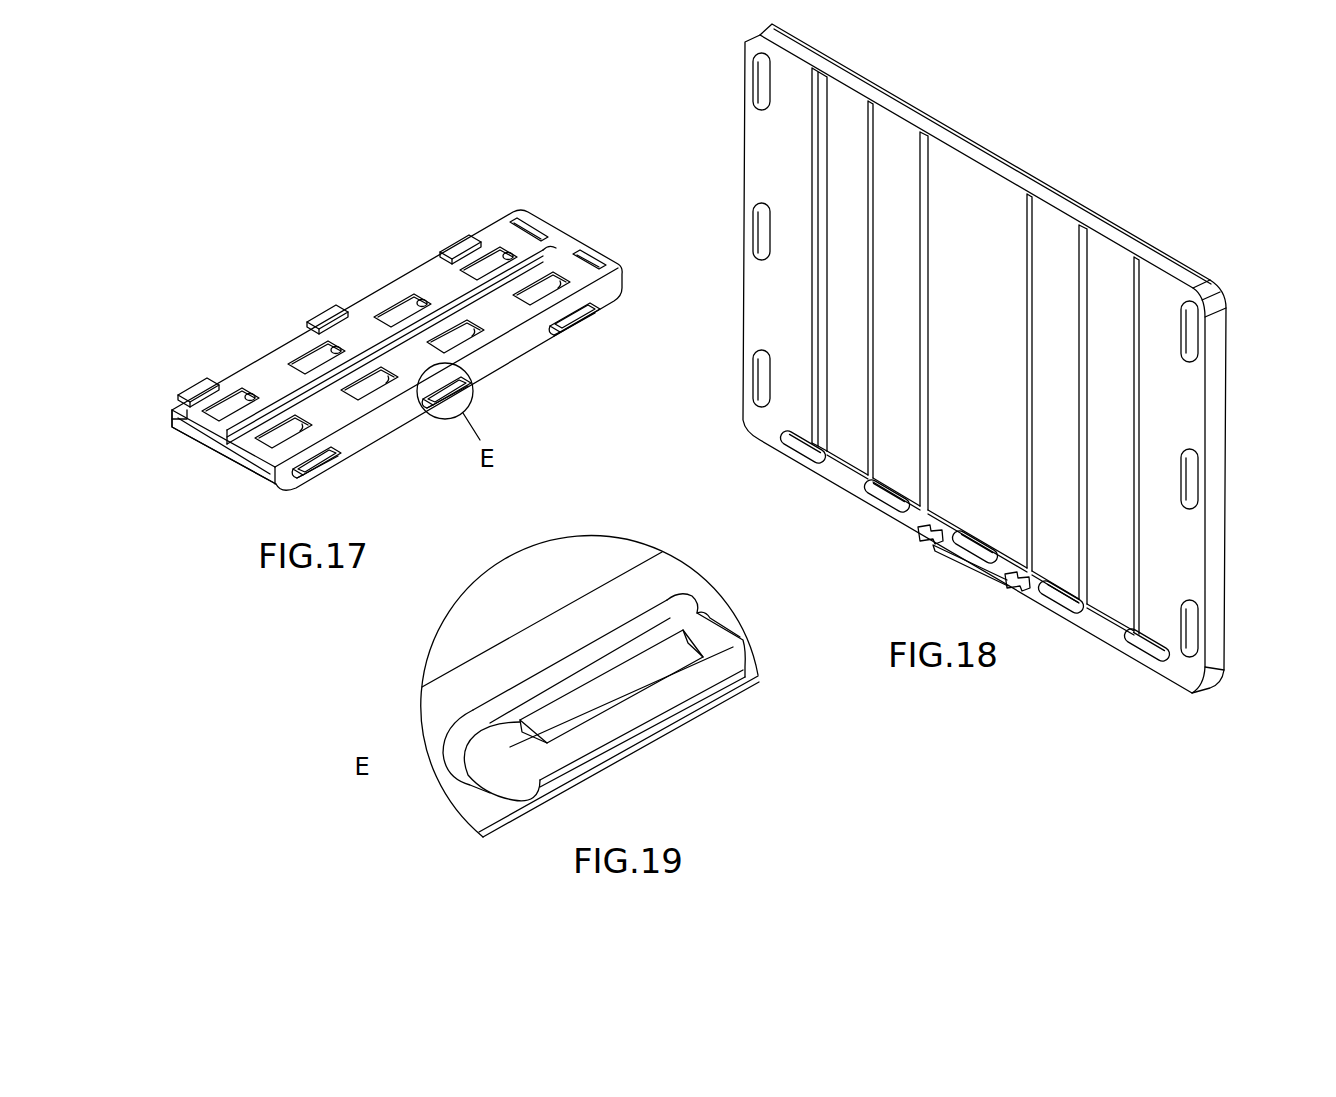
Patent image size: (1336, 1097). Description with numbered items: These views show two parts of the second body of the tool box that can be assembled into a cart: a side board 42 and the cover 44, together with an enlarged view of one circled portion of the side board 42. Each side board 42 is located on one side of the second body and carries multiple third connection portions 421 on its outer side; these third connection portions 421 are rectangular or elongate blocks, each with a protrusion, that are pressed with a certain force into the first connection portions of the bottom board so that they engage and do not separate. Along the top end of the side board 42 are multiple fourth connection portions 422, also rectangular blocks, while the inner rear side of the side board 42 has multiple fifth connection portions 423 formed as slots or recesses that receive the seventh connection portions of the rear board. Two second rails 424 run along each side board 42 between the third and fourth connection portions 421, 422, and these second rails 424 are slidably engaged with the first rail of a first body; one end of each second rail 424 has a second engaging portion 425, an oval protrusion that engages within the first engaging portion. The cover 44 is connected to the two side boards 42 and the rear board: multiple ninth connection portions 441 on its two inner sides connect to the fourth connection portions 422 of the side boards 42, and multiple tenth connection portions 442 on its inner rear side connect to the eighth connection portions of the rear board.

In FIG. 17, the side board 42 is at (500, 358).
In FIG. 17, the third connection portion 421 is at (570, 314).
In FIG. 19, the third connection portion 421 is at (645, 730).
In FIG. 17, the fourth connection portion 422 is at (330, 313).
In FIG. 17, the fifth connection portion 423 is at (532, 225).
In FIG. 17, the second rail 424 is at (170, 421).
In FIG. 17, the second engaging portion 425 is at (447, 237).
In FIG. 18, the cover 44 is at (998, 160).
In FIG. 18, the ninth connection portion 441 is at (1200, 487).
In FIG. 18, the tenth connection portion 442 is at (883, 503).